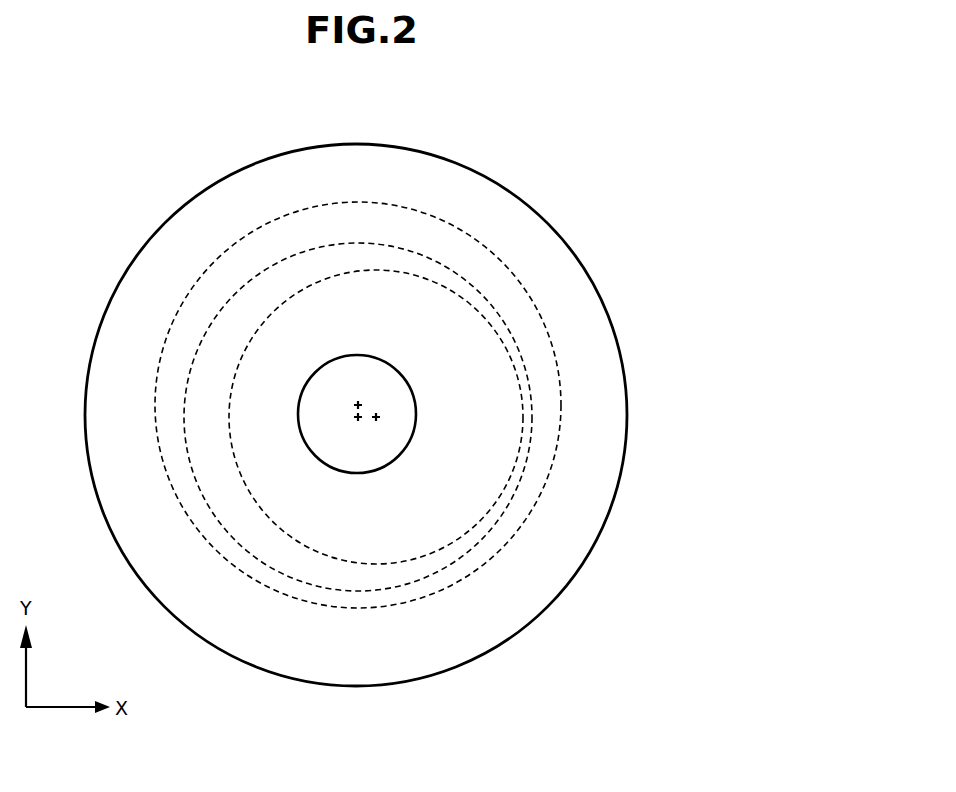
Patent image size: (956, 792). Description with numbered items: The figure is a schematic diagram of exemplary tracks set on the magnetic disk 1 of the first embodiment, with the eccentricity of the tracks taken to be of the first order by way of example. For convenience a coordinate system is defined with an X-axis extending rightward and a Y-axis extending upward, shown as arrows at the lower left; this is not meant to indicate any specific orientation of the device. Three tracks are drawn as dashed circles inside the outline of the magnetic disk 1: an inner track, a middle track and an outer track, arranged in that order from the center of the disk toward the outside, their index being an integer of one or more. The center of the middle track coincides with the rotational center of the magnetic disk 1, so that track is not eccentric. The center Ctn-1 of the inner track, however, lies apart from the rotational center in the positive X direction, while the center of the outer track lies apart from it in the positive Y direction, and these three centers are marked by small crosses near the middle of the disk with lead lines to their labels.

The magnetic disk 1 is at (359, 144).
The center of track #n-1 Ctn-1 is at (376, 417).